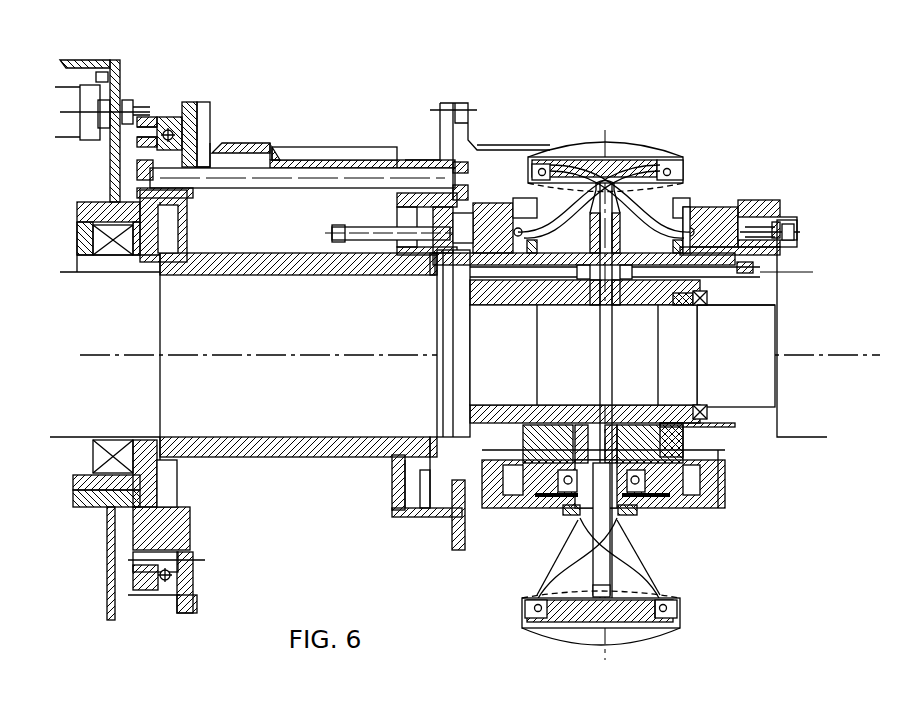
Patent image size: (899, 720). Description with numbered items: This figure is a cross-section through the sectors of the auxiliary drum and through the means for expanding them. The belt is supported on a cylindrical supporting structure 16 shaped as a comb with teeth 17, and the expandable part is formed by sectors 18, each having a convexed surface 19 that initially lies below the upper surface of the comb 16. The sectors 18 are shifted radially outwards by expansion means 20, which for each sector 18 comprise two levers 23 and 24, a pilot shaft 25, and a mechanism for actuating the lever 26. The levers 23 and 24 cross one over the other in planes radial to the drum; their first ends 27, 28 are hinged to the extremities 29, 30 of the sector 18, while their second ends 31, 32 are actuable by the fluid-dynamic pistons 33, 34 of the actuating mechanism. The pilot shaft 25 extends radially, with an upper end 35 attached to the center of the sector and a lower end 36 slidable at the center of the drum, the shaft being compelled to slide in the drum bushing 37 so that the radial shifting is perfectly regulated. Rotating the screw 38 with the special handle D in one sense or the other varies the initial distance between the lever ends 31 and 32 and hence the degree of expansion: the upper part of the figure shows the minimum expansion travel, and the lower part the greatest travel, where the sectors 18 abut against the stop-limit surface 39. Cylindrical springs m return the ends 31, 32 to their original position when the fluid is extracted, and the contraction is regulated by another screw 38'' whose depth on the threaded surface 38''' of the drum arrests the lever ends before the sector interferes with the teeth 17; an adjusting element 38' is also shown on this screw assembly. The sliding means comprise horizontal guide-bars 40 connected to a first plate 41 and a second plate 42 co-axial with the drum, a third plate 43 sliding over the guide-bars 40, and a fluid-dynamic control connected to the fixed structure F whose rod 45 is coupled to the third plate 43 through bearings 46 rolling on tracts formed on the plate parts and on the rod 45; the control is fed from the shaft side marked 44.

The cylindrical supporting structure 16 is at (235, 143).
The teeth 17 is at (300, 147).
The sectors 18 is at (660, 152).
The convexed surface 19 is at (615, 145).
The expansion means 20 is at (600, 195).
The lever 23 is at (553, 213).
The lever 24 is at (672, 197).
The pilot shaft 25 is at (617, 226).
The mechanism for actuating the lever 26 is at (752, 200).
The first end of lever 27 is at (540, 617).
The first end of lever 28 is at (670, 618).
The extremity of sector 29 is at (535, 606).
The extremity of sector 30 is at (685, 601).
The second end of lever 31 is at (523, 234).
The second end of lever 32 is at (686, 234).
The fluid-dynamic piston 33 is at (503, 207).
The fluid-dynamic piston 34 is at (718, 207).
The upper end of pilot shaft 35 is at (590, 596).
The lower end of pilot shaft 36 is at (598, 292).
The drum bushing 37 is at (592, 226).
The screw 38 is at (738, 344).
The adjusting nut 38' is at (668, 282).
The screw 38'' is at (827, 239).
The threaded surface 38''' is at (799, 214).
The stop-limit surface 39 is at (680, 456).
The horizontal guide-bars 40 is at (265, 188).
The first plate 41 is at (188, 238).
The second plate 42 is at (397, 207).
The third plate 43 is at (192, 530).
The input shaft 44 is at (56, 137).
The rod 45 is at (133, 117).
The bearings 46 is at (172, 120).
The special handle D is at (760, 270).
The fixed structure F is at (120, 68).
The cylindrical springs m is at (550, 506).